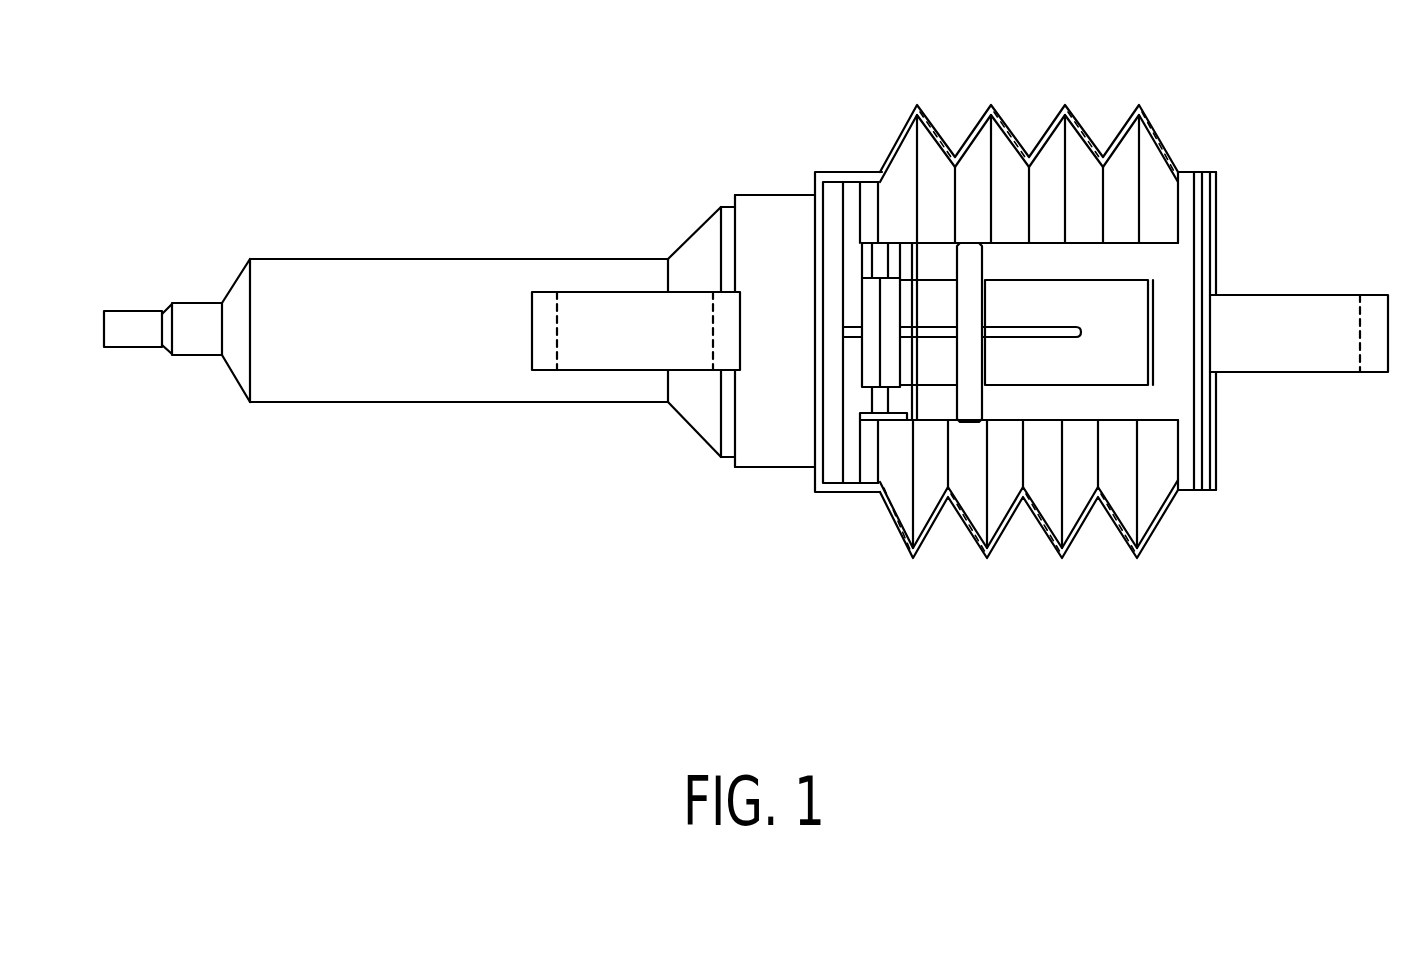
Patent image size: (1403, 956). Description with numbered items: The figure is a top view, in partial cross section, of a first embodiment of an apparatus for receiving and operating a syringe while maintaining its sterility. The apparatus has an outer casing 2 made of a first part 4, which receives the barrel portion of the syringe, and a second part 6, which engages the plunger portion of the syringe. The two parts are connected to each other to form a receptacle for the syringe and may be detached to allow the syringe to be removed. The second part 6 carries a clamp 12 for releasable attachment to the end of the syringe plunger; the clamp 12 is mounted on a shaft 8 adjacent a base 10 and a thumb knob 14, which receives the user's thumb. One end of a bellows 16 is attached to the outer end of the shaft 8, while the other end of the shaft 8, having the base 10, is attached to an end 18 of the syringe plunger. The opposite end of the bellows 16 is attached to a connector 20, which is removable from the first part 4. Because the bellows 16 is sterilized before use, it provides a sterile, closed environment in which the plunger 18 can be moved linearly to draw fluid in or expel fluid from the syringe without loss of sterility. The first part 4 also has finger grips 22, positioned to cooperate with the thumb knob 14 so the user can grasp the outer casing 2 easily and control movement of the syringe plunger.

The outer casing 2 is at (753, 511).
The first part 4 is at (383, 444).
The second part 6 is at (822, 530).
The shaft 8 is at (1077, 403).
The base 10 is at (895, 407).
The clamp 12 is at (1116, 308).
The thumb knob 14 is at (1273, 353).
The bellows 16 is at (1003, 541).
The end of the syringe plunger 18 is at (852, 292).
The connector 20 is at (763, 217).
The finger grips 22 is at (600, 320).